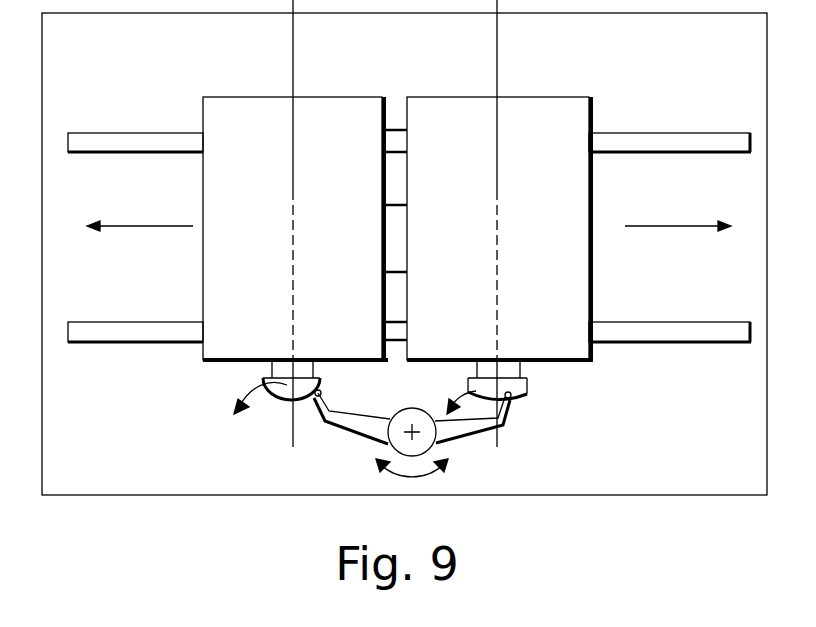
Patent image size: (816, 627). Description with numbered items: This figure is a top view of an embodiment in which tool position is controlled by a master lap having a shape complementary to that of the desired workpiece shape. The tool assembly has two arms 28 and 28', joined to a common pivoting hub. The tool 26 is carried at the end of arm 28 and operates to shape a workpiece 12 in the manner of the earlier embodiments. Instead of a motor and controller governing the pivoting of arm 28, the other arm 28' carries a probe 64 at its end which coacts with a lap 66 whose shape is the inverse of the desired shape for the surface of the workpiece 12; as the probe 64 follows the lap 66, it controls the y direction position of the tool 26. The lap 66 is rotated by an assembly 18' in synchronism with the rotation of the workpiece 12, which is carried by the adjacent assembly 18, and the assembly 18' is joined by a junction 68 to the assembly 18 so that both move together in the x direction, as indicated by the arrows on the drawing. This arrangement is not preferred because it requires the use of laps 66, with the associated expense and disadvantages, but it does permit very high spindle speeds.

The workpiece 12 is at (528, 386).
The assembly 18 is at (579, 206).
The assembly 18' is at (228, 206).
The tool 26 is at (510, 399).
The arm 28 is at (472, 440).
The arm 28' is at (346, 434).
The probe 64 is at (321, 392).
The lap 66 is at (283, 392).
The junction 68 is at (400, 243).